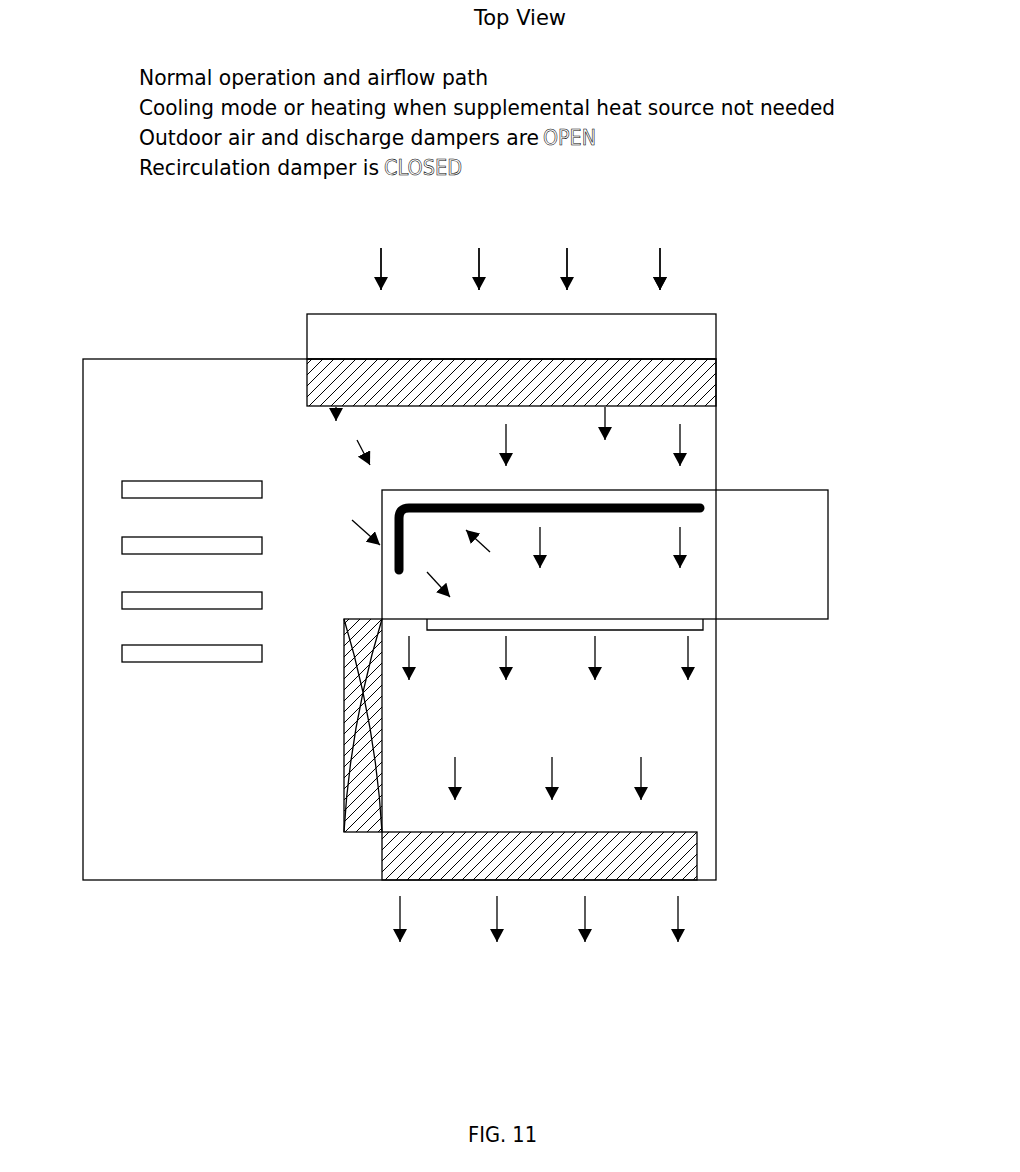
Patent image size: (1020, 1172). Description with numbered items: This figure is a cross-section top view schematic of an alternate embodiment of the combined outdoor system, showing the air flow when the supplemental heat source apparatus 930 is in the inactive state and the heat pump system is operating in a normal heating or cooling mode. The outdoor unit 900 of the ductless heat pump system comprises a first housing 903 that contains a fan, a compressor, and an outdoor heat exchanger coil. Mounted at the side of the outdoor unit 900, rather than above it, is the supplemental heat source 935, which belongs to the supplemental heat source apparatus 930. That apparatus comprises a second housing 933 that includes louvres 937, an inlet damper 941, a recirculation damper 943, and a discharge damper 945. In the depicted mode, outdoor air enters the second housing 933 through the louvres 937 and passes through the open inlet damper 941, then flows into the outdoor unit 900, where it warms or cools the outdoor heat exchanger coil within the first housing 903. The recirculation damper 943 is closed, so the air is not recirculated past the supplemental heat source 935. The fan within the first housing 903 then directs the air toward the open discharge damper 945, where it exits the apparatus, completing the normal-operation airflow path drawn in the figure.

The outdoor unit 900 is at (792, 473).
The first housing 903 is at (830, 580).
The supplemental heat source apparatus 930 is at (158, 316).
The second housing 933 is at (117, 357).
The supplemental heat source 935 is at (192, 480).
The louvres 937 is at (716, 326).
The inlet damper 941 is at (716, 386).
The recirculation damper 943 is at (343, 741).
The discharge damper 945 is at (697, 856).